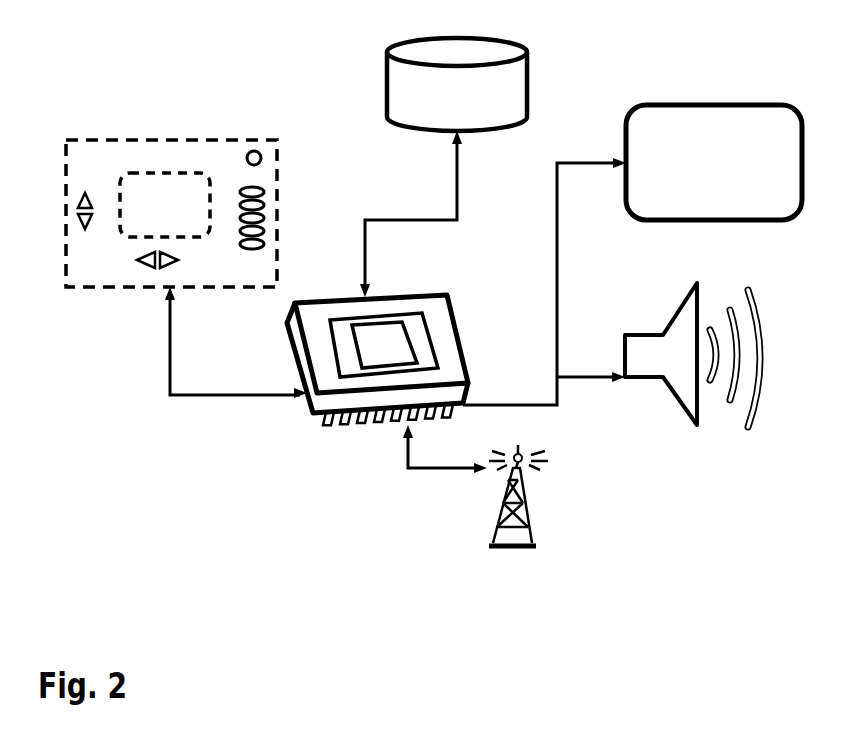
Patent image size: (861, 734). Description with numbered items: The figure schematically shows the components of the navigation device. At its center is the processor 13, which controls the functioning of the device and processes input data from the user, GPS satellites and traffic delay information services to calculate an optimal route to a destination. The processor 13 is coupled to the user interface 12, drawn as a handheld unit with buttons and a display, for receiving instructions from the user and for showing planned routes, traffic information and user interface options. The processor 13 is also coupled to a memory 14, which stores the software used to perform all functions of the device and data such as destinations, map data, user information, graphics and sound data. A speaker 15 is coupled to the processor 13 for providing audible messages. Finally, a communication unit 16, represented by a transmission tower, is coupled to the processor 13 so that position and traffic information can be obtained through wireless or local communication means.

The user interface 12 is at (170, 140).
The processor 13 is at (362, 428).
The memory 14 is at (387, 82).
The speaker 15 is at (625, 333).
The communication unit 16 is at (538, 543).